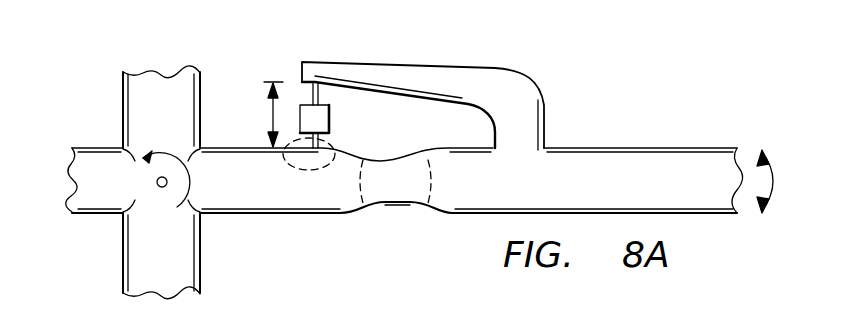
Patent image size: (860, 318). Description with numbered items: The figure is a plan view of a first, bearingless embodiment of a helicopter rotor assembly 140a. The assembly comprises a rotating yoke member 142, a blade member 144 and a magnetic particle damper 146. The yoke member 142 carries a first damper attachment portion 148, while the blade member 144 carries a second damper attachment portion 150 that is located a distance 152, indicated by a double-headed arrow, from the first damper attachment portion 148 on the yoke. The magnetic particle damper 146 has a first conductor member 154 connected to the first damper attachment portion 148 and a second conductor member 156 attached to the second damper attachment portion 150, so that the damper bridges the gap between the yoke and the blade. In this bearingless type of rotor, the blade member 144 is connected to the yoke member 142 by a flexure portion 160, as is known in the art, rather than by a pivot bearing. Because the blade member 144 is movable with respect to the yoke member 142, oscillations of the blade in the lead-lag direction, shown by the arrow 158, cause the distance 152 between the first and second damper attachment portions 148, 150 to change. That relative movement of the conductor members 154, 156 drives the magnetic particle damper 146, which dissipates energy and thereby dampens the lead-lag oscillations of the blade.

The helicopter rotor assembly 140a is at (80, 45).
The rotating yoke member 142 is at (100, 148).
The blade member 144 is at (613, 148).
The magnetic particle damper 146 is at (330, 118).
The first damper attachment portion 148 is at (318, 138).
The second damper attachment portion 150 is at (313, 70).
The distance 152 is at (272, 108).
The first conductor member 154 is at (290, 146).
The second conductor member 156 is at (311, 96).
The lead-lag direction 158 is at (773, 181).
The flexure portion 160 is at (388, 205).